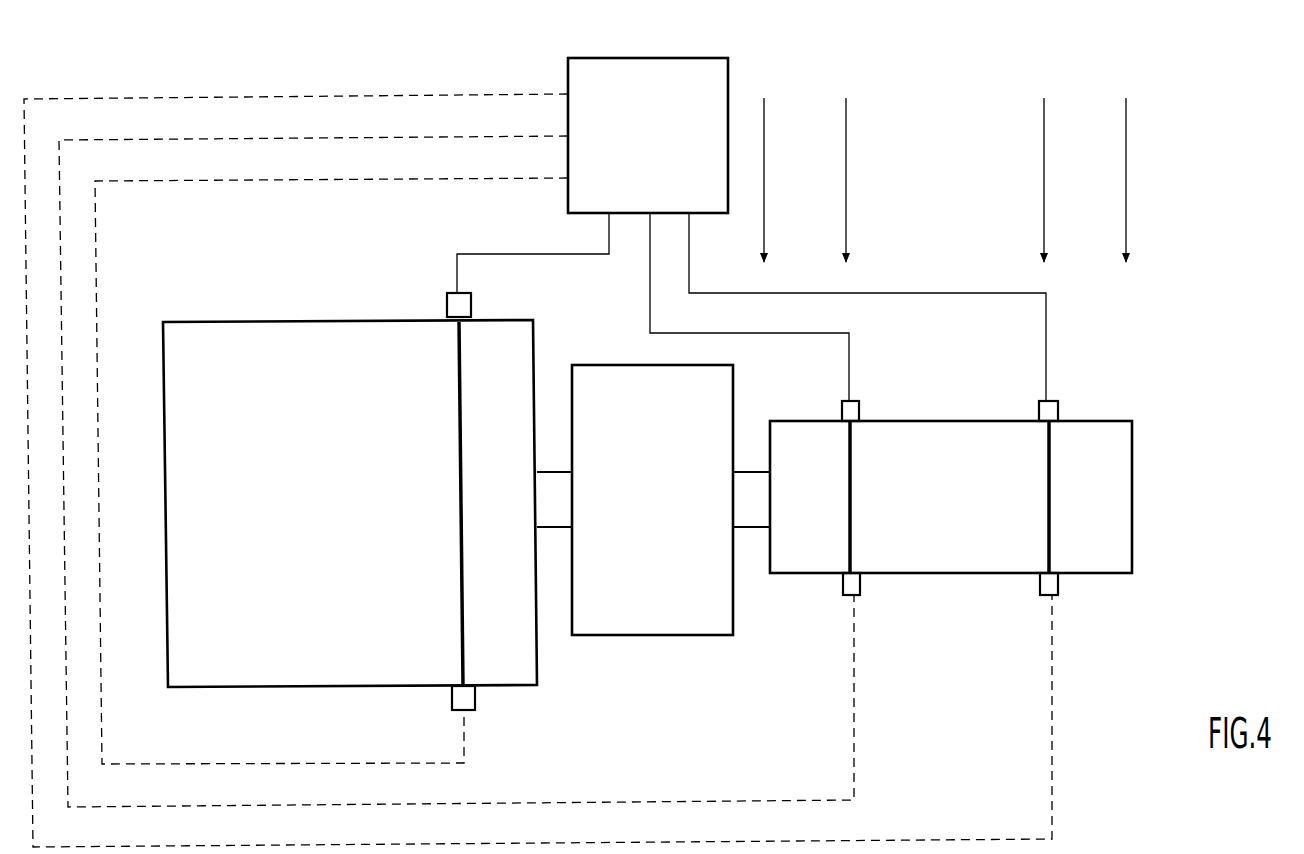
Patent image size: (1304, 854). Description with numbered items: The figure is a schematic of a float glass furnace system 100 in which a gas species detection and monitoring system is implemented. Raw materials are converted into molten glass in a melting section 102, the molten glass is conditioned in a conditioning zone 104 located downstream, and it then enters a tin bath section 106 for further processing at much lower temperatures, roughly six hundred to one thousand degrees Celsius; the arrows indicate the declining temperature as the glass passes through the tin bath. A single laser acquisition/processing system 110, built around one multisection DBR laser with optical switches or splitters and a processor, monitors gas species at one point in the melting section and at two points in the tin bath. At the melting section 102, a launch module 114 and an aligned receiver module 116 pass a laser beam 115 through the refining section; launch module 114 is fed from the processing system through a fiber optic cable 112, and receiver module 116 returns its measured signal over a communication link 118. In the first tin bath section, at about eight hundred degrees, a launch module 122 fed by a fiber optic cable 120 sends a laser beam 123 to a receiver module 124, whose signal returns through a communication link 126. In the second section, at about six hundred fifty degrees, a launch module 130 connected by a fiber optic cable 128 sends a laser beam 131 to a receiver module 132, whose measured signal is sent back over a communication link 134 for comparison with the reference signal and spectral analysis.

The float glass furnace system 100 is at (1203, 285).
The melting section 102 is at (255, 322).
The conditioning zone 104 is at (653, 635).
The tin bath section 106 is at (943, 573).
The laser acquisition/processing system 110 is at (616, 58).
The fiber optic cable 112 is at (533, 254).
The launch module 114 is at (447, 306).
The laser beam 115 is at (460, 430).
The receiver module 116 is at (476, 698).
The communication link 118 is at (375, 181).
The fiber optic cable 120 is at (650, 298).
The launch module 122 is at (859, 411).
The laser beam 123 is at (850, 516).
The receiver module 124 is at (843, 587).
The communication link 126 is at (387, 139).
The fiber optic cable 128 is at (927, 293).
The launch module 130 is at (1058, 411).
The laser beam 131 is at (1049, 510).
The receiver module 132 is at (1058, 586).
The communication link 134 is at (360, 97).